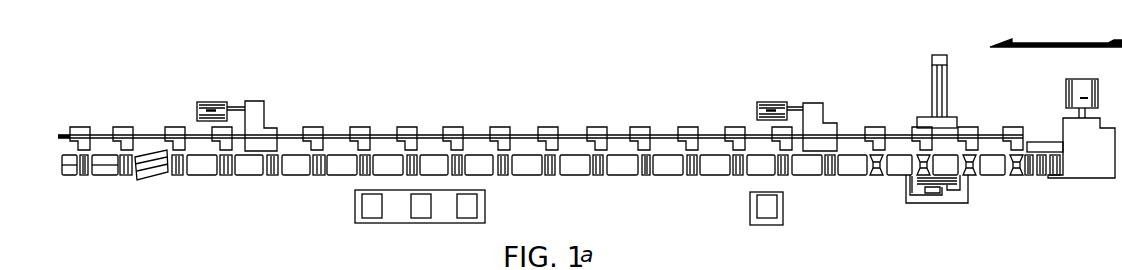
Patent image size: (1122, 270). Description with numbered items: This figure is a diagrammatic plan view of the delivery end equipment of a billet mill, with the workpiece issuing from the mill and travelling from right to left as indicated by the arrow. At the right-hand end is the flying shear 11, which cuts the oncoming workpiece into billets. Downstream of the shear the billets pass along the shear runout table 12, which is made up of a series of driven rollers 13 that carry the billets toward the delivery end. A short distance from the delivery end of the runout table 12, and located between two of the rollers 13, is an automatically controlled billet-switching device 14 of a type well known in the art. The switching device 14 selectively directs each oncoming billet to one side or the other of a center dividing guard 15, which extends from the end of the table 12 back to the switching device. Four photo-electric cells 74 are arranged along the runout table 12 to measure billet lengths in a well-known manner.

The flying shear 11 is at (1092, 176).
The shear runout table 12 is at (603, 184).
The driven rollers 13 is at (271, 170).
The billet-switching device 14 is at (157, 182).
The center dividing guard 15 is at (101, 168).
The container 74 is at (367, 203).